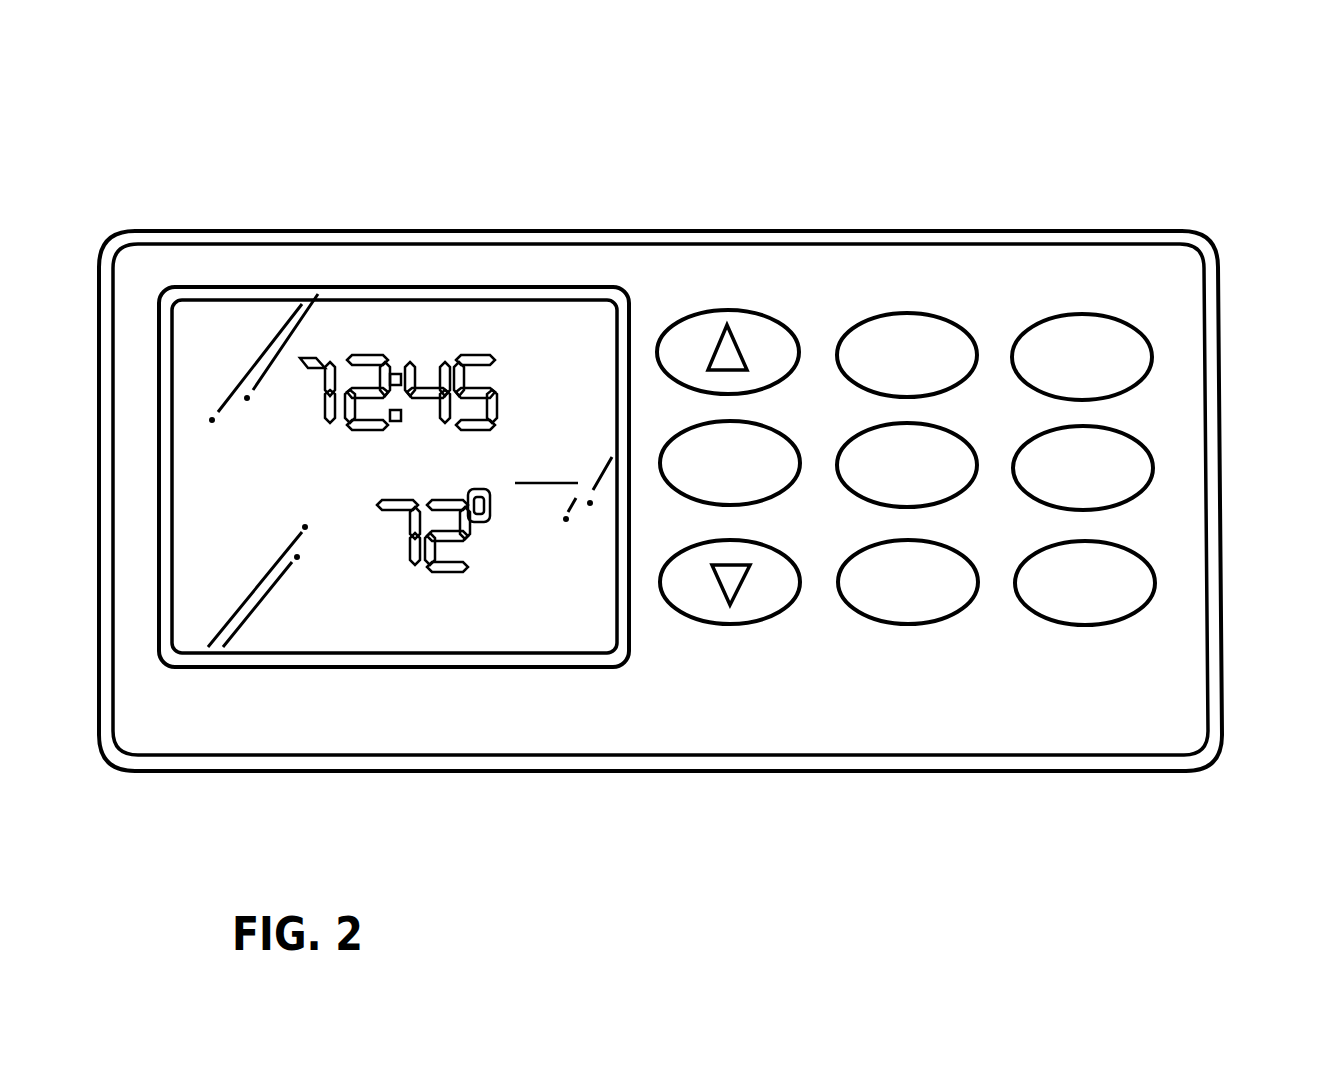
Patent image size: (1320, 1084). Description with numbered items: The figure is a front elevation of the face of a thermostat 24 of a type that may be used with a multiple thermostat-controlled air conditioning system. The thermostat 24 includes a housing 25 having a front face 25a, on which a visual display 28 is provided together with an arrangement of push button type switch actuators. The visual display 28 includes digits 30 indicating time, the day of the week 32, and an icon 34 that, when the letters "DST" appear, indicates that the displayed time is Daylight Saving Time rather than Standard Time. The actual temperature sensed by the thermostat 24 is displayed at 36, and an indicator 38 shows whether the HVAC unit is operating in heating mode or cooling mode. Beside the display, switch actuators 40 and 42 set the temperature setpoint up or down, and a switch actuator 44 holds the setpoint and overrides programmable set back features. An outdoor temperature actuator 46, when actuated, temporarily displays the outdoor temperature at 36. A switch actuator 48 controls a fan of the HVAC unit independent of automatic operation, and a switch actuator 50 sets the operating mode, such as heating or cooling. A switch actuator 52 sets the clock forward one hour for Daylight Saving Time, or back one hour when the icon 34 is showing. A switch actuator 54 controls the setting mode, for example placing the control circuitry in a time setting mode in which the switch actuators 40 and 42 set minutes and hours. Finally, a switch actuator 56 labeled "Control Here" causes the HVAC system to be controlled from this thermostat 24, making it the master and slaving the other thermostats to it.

The thermostat 24 is at (805, 176).
The housing 25 is at (981, 231).
The front face 25a is at (992, 732).
The visual display 28 is at (222, 338).
The digits indicating time 30 is at (369, 345).
The day of the week 32 is at (403, 466).
The icon 34 is at (555, 443).
The temperature display 36 is at (393, 548).
The indicator 38 is at (556, 536).
The switch actuator 40 is at (657, 343).
The switch actuator 42 is at (767, 625).
The switch actuator 44 is at (800, 465).
The outdoor temperature actuator 46 is at (1127, 622).
The switch actuator 48 is at (1152, 474).
The switch actuator 50 is at (1145, 355).
The switch actuator 52 is at (958, 617).
The switch actuator 54 is at (847, 440).
The switch actuator 56 is at (972, 352).